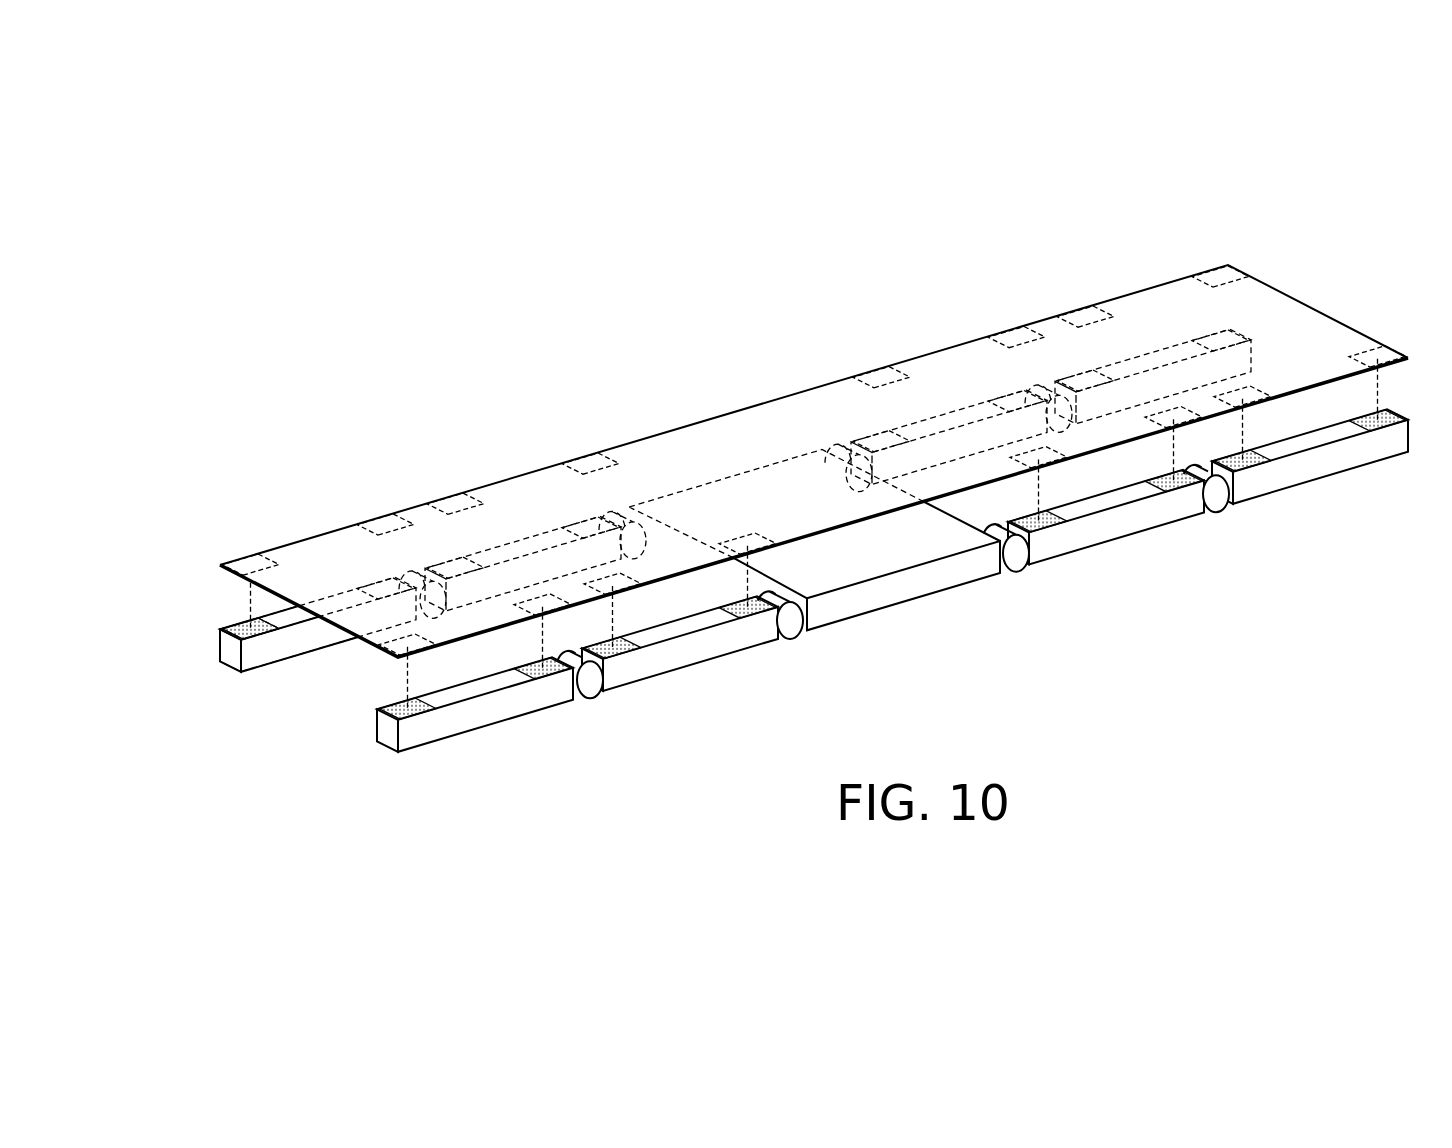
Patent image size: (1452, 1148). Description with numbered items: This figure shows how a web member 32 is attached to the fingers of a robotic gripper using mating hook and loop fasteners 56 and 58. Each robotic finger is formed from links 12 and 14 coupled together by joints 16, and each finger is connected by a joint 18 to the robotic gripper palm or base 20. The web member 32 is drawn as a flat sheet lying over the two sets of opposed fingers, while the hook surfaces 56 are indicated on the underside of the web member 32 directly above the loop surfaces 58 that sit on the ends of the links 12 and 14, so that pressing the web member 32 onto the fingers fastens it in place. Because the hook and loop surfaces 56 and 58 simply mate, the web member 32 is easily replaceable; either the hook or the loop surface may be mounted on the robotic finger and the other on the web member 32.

The link 12 is at (262, 670).
The link 14 is at (540, 530).
The joint 16 is at (432, 582).
The joint 18 is at (631, 522).
The robotic gripper palm or base 20 is at (905, 603).
The web member 32 is at (1307, 303).
The hook surface 56 is at (392, 522).
The loop surface 58 is at (370, 582).